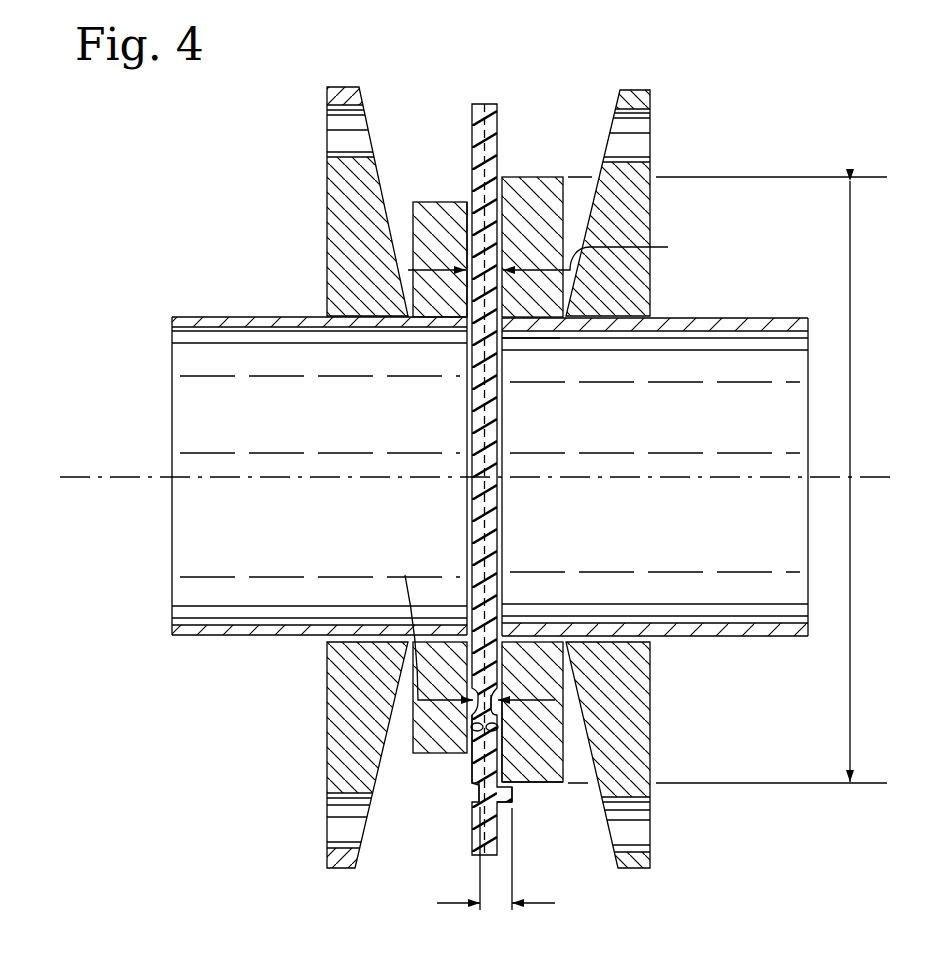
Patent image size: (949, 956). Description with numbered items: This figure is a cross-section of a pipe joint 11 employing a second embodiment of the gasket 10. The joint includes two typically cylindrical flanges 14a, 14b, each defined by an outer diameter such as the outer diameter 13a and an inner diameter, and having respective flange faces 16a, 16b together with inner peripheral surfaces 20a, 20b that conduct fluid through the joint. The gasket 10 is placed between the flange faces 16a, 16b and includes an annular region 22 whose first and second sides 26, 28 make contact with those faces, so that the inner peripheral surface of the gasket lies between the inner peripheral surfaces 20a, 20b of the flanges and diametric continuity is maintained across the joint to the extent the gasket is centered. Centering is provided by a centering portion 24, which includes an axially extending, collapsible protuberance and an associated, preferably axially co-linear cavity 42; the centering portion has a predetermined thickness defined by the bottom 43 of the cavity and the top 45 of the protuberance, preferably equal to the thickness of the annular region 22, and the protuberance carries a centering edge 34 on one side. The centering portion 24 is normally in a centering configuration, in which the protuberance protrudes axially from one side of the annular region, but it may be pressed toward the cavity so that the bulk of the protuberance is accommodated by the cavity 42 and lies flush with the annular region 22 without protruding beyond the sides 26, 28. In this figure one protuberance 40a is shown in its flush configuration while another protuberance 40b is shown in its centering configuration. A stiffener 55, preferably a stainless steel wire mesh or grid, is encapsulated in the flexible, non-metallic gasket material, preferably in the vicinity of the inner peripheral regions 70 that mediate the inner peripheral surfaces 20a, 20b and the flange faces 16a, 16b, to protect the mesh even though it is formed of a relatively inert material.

The gasket 10 is at (488, 443).
The pipe joint 11 is at (687, 123).
The outer diameter of flange 13a is at (851, 380).
The flange 14a is at (547, 182).
The flange 14b is at (427, 210).
The flange face 16a is at (500, 728).
The flange face 16b is at (476, 735).
The inner peripheral surface 20a is at (787, 638).
The inner peripheral surface 20b is at (236, 620).
The annular region 22 is at (505, 770).
The centering portion 24 is at (515, 690).
The first side of annular region 26 is at (498, 162).
The second side of annular region 28 is at (475, 282).
The centering edge 34 is at (515, 748).
The protuberance 40a is at (518, 687).
The protuberance 40b is at (502, 795).
The cavity 42 is at (463, 793).
The bottom of cavity 43 is at (472, 800).
The top of protuberance 45 is at (513, 790).
The stiffener 55 is at (474, 148).
The inner peripheral region 70 is at (464, 343).